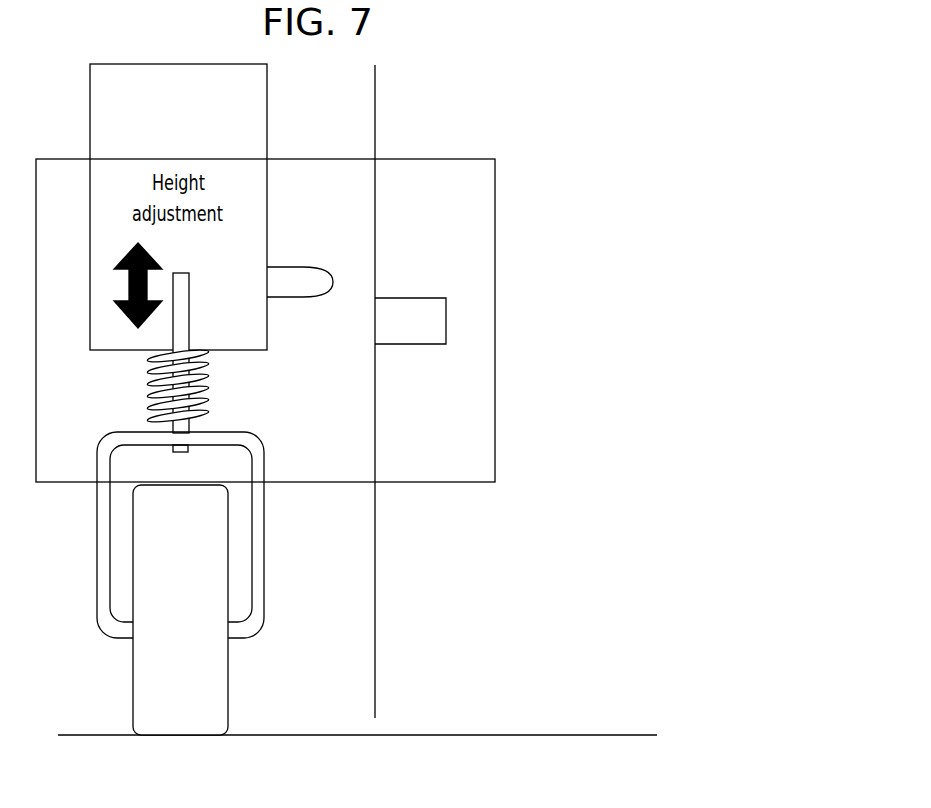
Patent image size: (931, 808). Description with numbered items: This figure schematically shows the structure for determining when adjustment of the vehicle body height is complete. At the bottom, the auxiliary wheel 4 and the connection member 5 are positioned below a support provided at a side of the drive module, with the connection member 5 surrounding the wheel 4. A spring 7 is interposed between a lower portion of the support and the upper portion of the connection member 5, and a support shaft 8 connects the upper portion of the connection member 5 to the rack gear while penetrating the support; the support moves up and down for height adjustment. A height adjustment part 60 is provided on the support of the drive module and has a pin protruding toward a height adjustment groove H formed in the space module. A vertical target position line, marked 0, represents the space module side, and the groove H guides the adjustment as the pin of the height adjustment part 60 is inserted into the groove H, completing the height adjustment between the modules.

The target position line 0 is at (375, 648).
The height adjustment groove H is at (413, 325).
The height adjustment part 60 is at (298, 269).
The support shaft 8 is at (182, 305).
The spring 7 is at (148, 393).
The connection member 5 is at (97, 538).
The auxiliary wheel 4 is at (133, 678).